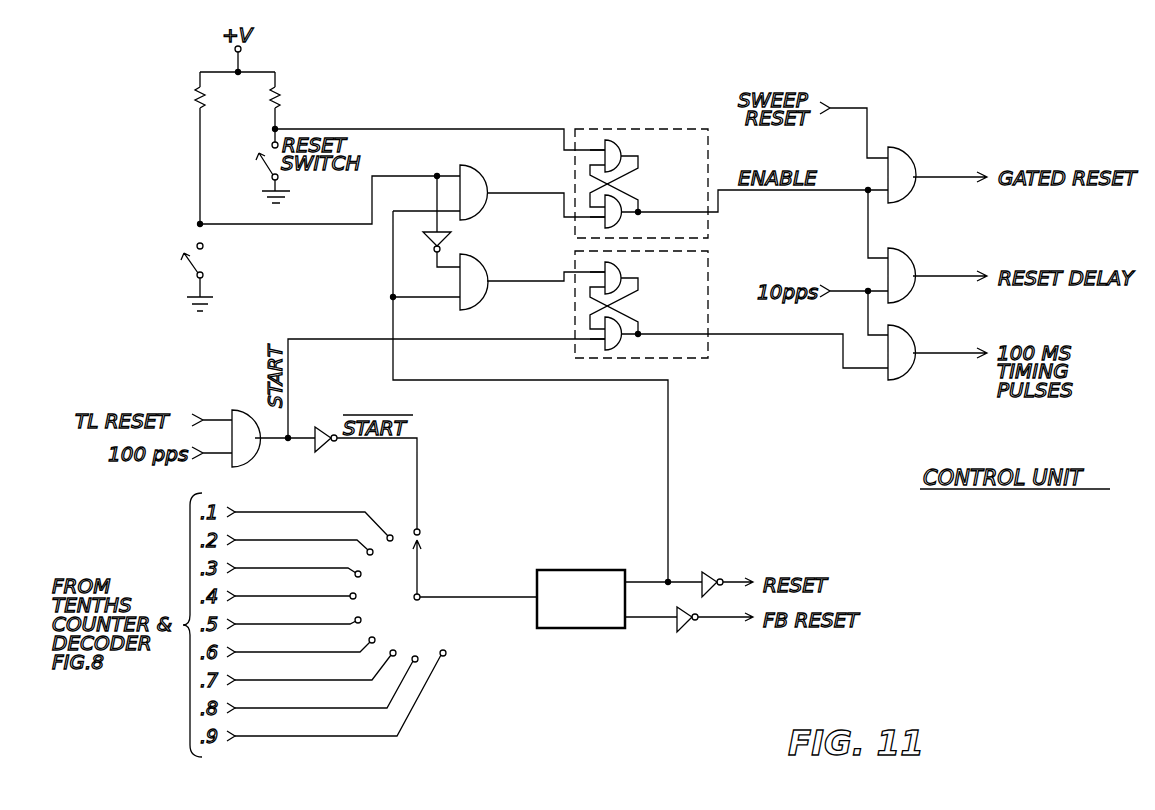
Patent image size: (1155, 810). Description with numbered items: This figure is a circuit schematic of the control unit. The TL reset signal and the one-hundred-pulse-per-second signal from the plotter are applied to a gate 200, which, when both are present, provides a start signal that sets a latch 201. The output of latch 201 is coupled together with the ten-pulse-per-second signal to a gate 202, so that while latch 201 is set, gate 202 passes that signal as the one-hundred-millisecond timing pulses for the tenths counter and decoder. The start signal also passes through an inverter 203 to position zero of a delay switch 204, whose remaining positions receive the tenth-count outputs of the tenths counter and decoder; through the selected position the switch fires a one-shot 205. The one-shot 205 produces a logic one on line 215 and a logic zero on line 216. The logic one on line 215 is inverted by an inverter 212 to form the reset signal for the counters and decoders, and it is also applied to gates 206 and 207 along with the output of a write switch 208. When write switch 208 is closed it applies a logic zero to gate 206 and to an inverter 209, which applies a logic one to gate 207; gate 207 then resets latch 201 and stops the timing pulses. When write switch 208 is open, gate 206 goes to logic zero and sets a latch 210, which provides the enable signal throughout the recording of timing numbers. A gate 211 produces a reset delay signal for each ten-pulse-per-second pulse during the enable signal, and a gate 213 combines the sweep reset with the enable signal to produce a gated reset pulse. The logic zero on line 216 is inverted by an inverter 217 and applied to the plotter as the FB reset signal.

The gate 200 is at (238, 410).
The latch 201 is at (709, 277).
The gate 202 is at (908, 340).
The inverter 203 is at (322, 426).
The delay switch 204 is at (475, 591).
The one-shot 205 is at (558, 570).
The gate 206 is at (484, 174).
The gate 207 is at (484, 262).
The write switch 208 is at (277, 302).
The inverter 209 is at (435, 250).
The latch 210 is at (709, 155).
The gate 211 is at (908, 264).
The inverter 212 is at (708, 571).
The gate 213 is at (908, 160).
The line 215 is at (657, 580).
The line 216 is at (665, 620).
The inverter 217 is at (690, 629).